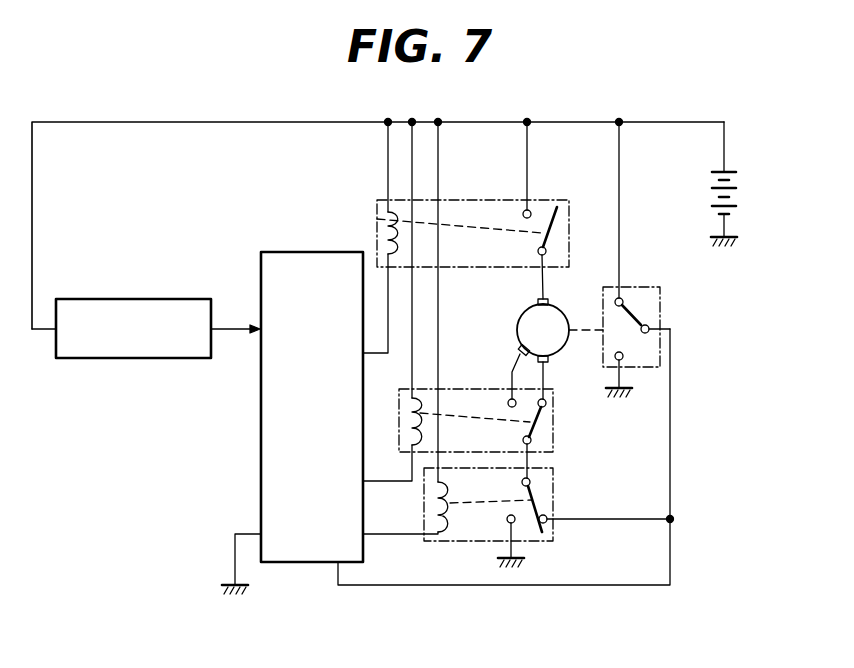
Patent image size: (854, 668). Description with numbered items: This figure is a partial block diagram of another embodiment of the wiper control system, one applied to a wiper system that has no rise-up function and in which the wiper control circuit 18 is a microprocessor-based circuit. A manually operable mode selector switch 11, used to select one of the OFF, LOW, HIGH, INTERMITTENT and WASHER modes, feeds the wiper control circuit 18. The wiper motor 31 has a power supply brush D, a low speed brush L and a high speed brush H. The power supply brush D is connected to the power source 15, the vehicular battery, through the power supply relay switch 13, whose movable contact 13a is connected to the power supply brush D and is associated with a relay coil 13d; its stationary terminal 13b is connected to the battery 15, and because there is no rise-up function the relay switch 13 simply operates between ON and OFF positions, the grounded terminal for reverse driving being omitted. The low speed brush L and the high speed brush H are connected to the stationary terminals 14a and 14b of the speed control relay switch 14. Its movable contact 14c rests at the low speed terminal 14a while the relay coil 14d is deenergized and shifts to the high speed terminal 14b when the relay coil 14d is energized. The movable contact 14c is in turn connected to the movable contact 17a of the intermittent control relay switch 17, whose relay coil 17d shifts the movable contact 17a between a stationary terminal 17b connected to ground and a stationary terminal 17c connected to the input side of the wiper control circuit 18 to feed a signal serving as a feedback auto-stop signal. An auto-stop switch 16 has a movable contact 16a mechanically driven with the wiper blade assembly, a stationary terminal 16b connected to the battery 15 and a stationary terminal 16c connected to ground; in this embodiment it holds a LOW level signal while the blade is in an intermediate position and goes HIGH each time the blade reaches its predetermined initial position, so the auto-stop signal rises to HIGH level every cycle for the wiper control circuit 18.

The mode selector switch 11 is at (135, 360).
The power supply relay switch 13 is at (472, 198).
The movable contact 13a is at (558, 218).
The stationary terminal 13b is at (532, 210).
The relay coil 13d is at (347, 220).
The speed control relay switch 14 is at (556, 424).
The stationary terminal 14a is at (548, 404).
The stationary terminal 14b is at (509, 399).
The movable contact 14c is at (533, 432).
The relay coil 14d is at (402, 425).
The power source 15 is at (720, 201).
The auto-stop switch 16 is at (625, 290).
The movable contact 16a is at (655, 322).
The stationary terminal 16b is at (625, 302).
The stationary terminal 16c is at (625, 360).
The intermittent control relay switch 17 is at (440, 545).
The movable contact 17a is at (540, 503).
The stationary terminal 17b is at (507, 523).
The stationary terminal 17c is at (550, 523).
The relay coil 17d is at (437, 507).
The wiper control circuit 18 is at (290, 565).
The wiper motor 31 is at (522, 312).
The power supply brush D is at (549, 302).
The high speed brush H is at (519, 349).
The low speed brush L is at (548, 358).